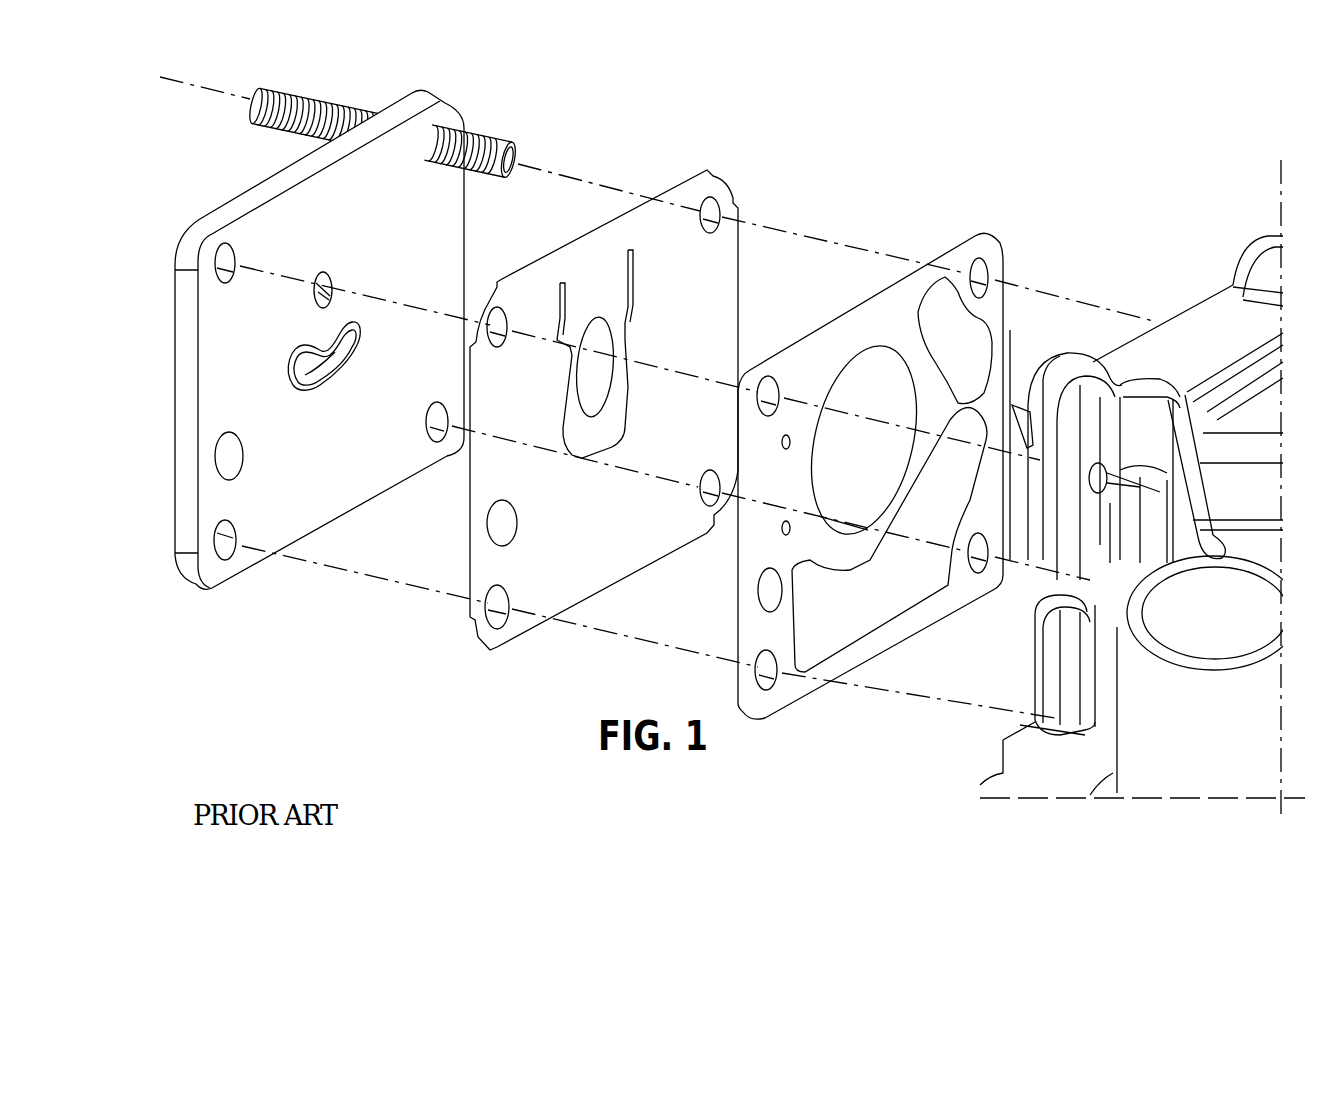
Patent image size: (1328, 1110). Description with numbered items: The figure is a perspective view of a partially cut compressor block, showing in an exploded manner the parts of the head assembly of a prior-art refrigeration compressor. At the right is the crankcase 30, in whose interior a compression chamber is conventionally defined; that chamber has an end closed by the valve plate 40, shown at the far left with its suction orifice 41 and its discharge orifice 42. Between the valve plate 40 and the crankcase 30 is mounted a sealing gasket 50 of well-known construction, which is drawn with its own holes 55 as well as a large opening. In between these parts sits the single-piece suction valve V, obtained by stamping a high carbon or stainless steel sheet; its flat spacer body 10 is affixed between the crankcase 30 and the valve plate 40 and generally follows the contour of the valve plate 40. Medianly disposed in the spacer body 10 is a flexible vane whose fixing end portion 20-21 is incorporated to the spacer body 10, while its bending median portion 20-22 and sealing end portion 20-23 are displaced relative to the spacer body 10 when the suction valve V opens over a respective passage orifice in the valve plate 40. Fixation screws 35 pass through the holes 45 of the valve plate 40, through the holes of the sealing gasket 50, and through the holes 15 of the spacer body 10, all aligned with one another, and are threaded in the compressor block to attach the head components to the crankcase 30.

The spacer body 10 is at (605, 552).
The holes 15 is at (508, 330).
The fixing end portion 20-21 is at (590, 292).
The bending median portion 20-22 is at (588, 375).
The sealing end portion 20-23 is at (592, 432).
The crankcase 30 is at (1198, 291).
The fixation screws 35 is at (518, 142).
The valve plate 40 is at (352, 478).
The suction orifice 41 is at (338, 378).
The discharge orifice 42 is at (335, 285).
The holes 45 is at (238, 257).
The sealing gasket 50 is at (961, 240).
The holes of gasket 55 is at (990, 274).
The suction valve V is at (688, 170).